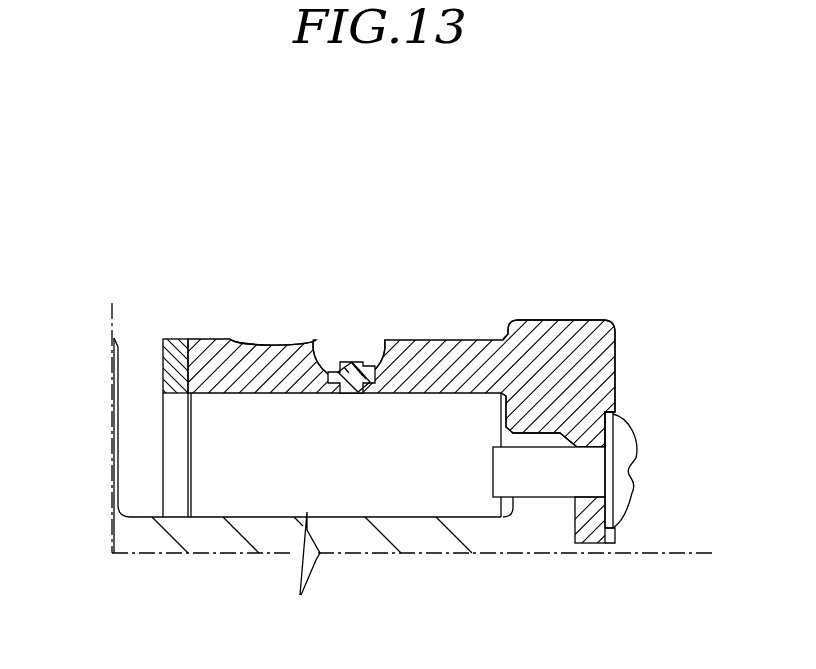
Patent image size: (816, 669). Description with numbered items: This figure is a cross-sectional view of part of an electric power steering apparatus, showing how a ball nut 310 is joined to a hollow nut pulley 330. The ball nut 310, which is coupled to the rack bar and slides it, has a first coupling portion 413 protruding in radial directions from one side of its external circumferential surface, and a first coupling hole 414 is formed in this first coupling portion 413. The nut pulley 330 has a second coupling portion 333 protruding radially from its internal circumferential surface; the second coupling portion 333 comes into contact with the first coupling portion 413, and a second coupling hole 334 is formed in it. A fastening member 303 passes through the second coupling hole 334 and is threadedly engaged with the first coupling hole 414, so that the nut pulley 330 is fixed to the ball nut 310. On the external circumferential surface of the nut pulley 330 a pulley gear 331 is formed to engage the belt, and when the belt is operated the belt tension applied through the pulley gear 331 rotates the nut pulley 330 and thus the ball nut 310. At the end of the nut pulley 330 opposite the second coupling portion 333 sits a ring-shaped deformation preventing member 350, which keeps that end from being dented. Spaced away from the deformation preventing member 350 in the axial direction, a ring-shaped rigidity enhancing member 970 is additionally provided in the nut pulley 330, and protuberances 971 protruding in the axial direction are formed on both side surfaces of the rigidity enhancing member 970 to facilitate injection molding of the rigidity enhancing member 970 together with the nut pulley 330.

The fastening member 303 is at (620, 443).
The ball nut 310 is at (140, 537).
The nut pulley 330 is at (207, 358).
The pulley gear 331 is at (263, 345).
The second coupling portion 333 is at (597, 432).
The second coupling hole 334 is at (582, 482).
The deformation preventing member 350 is at (174, 345).
The first coupling portion 413 is at (538, 433).
The first coupling hole 414 is at (530, 483).
The rigidity enhancing member 970 is at (355, 362).
The protuberance 971 is at (310, 343).